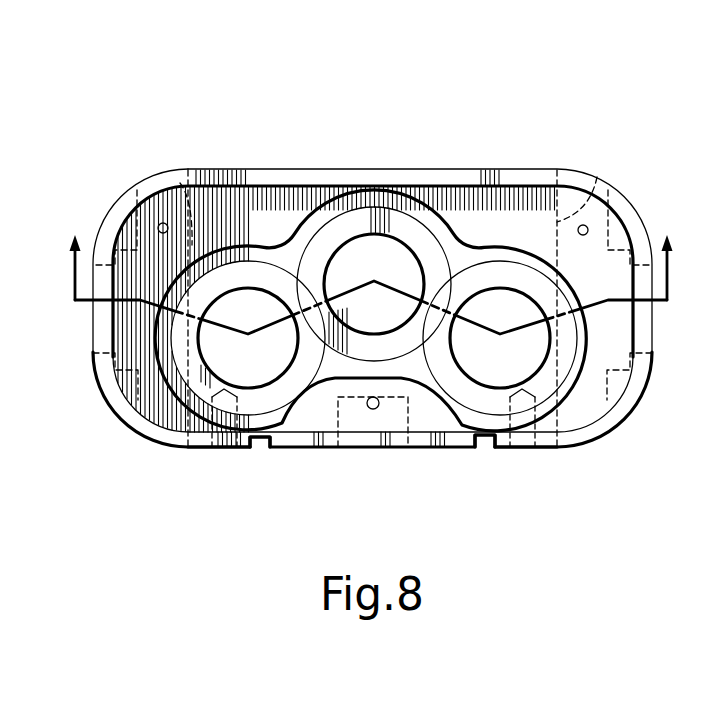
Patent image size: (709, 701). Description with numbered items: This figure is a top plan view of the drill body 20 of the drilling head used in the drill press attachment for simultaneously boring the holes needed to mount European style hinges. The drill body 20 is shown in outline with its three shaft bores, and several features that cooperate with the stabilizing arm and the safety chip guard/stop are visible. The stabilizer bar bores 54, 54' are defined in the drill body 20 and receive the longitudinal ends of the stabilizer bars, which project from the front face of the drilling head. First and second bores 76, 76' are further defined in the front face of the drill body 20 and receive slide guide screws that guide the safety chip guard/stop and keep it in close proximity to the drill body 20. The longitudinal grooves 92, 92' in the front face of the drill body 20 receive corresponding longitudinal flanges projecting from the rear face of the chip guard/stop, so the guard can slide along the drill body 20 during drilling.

The drill body 20 is at (511, 139).
The stabilizer bar bore 54 is at (159, 186).
The stabilizer bar bore 54' is at (581, 176).
The first bore 76 is at (219, 479).
The second bore 76' is at (543, 479).
The longitudinal groove 92 is at (250, 450).
The longitudinal groove 92' is at (505, 453).